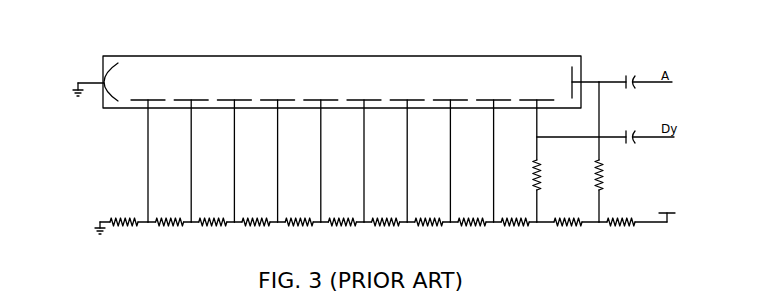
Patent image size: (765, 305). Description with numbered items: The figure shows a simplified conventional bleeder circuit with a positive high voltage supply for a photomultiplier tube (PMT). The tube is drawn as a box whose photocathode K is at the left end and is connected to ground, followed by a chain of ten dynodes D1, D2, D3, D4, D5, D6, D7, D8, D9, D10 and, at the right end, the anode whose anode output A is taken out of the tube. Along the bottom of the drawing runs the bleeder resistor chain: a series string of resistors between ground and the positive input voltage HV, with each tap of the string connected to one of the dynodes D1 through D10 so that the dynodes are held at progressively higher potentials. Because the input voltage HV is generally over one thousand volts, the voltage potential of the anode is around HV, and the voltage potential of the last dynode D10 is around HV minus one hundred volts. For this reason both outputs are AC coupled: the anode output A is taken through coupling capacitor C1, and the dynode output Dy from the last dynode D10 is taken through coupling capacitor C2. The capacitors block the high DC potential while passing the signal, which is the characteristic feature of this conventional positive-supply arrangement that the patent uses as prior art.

The photocathode K is at (95, 82).
The anode output A is at (580, 82).
The dynode D1 is at (148, 153).
The dynode D2 is at (191, 153).
The dynode D3 is at (234, 153).
The dynode D4 is at (278, 153).
The dynode D5 is at (321, 153).
The dynode D6 is at (364, 153).
The dynode D7 is at (407, 153).
The dynode D8 is at (450, 153).
The dynode D9 is at (494, 153).
The dynode D10 is at (537, 150).
The coupling capacitor C1 is at (635, 72).
The coupling capacitor C2 is at (646, 127).
The input voltage HV is at (638, 211).